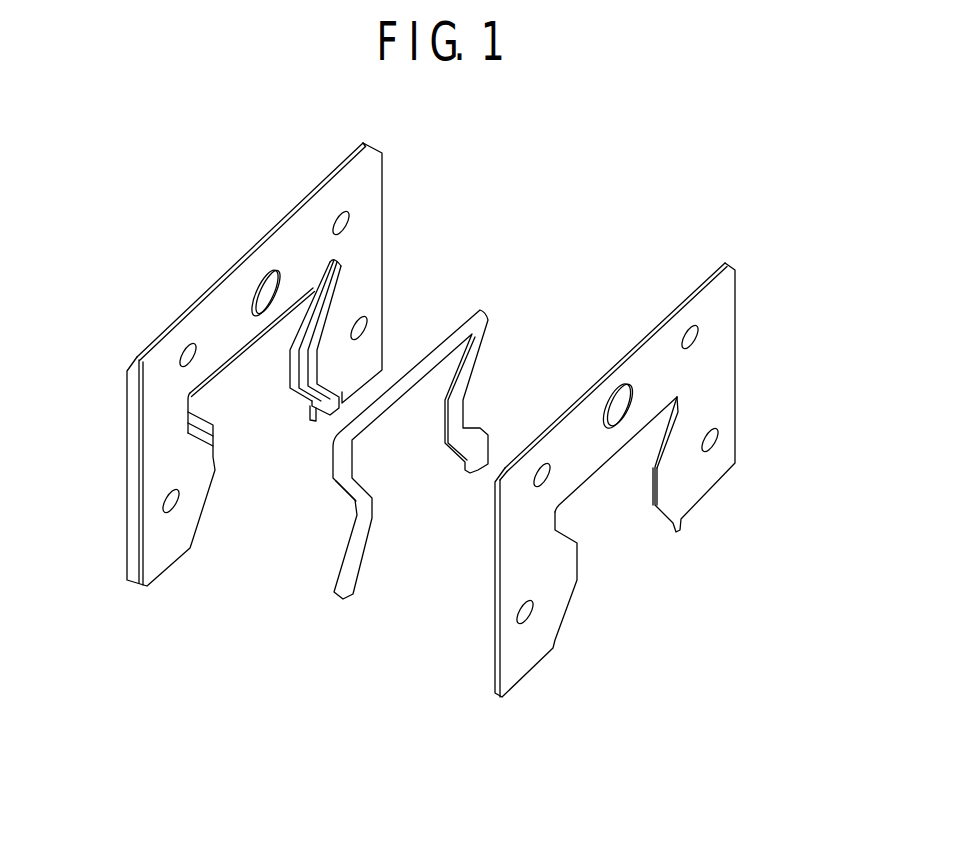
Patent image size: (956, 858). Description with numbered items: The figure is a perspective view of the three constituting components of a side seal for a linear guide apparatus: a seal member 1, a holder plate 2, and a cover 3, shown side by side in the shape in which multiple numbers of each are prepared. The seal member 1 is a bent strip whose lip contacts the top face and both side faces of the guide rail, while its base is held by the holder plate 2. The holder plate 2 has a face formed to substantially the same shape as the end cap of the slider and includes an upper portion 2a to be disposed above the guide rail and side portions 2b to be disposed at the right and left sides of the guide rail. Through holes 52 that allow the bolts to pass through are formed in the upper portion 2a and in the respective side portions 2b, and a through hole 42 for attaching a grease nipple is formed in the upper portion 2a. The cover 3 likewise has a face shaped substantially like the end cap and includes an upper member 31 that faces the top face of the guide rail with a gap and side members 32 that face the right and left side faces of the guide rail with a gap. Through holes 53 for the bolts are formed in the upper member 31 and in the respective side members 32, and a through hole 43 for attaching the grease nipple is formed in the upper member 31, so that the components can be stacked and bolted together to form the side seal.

The seal member 1 is at (325, 609).
The holder plate 2 is at (256, 419).
The upper portion 2a is at (220, 328).
The side portions 2b is at (365, 280).
The cover 3 is at (611, 526).
The upper member 31 is at (577, 440).
The side members 32 is at (705, 392).
The through hole 42 is at (275, 288).
The through hole 43 is at (614, 386).
The through holes 52 is at (190, 350).
The through holes 53 is at (545, 467).